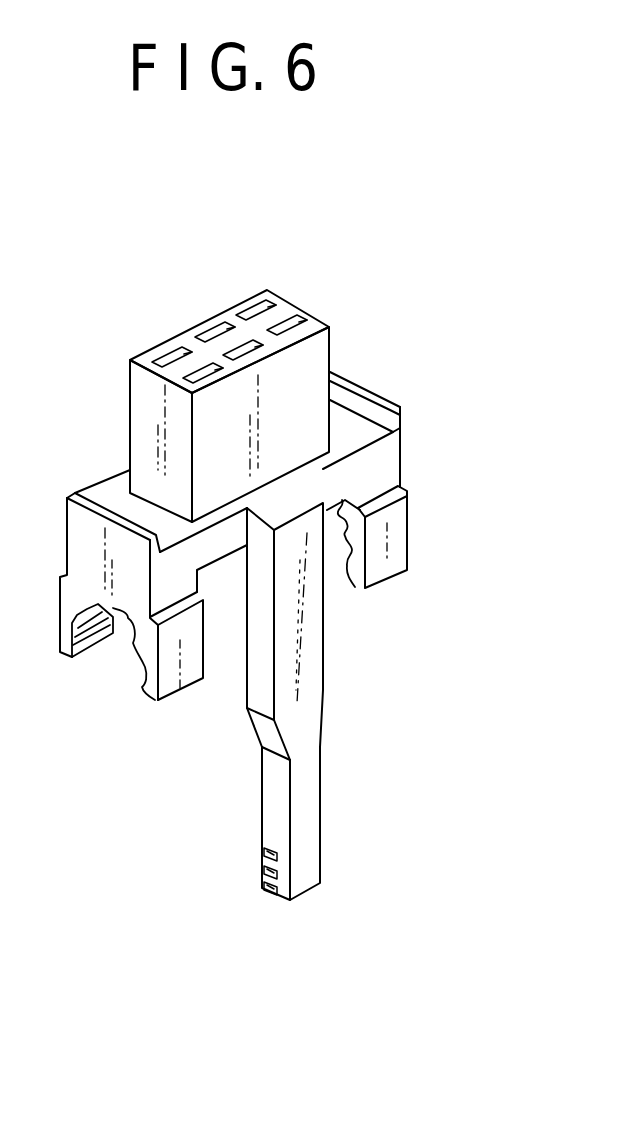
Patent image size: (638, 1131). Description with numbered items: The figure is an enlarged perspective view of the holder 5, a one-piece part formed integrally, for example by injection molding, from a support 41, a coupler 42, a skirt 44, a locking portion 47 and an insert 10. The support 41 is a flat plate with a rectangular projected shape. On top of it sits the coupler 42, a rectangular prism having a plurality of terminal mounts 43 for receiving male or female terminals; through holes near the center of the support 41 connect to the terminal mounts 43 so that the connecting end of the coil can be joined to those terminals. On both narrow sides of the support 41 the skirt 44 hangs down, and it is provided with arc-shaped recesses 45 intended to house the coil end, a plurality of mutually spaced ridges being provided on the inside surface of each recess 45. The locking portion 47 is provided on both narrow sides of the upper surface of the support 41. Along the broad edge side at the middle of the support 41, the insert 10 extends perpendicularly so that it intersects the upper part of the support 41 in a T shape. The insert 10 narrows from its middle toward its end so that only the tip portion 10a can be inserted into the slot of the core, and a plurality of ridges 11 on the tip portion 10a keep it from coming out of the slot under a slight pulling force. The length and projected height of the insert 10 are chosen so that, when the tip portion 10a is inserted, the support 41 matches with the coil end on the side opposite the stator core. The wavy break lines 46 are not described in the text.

The holder 5 is at (112, 335).
The insert 10 is at (318, 691).
The tip portion 10a is at (305, 823).
The ridges 11 is at (263, 860).
The support 41 is at (350, 428).
The coupler 42 is at (313, 348).
The terminal mounts 43 is at (262, 306).
The skirt 44 is at (395, 558).
The recesses 45 is at (335, 538).
The slits 46 is at (355, 587).
The locking portion 47 is at (367, 378).